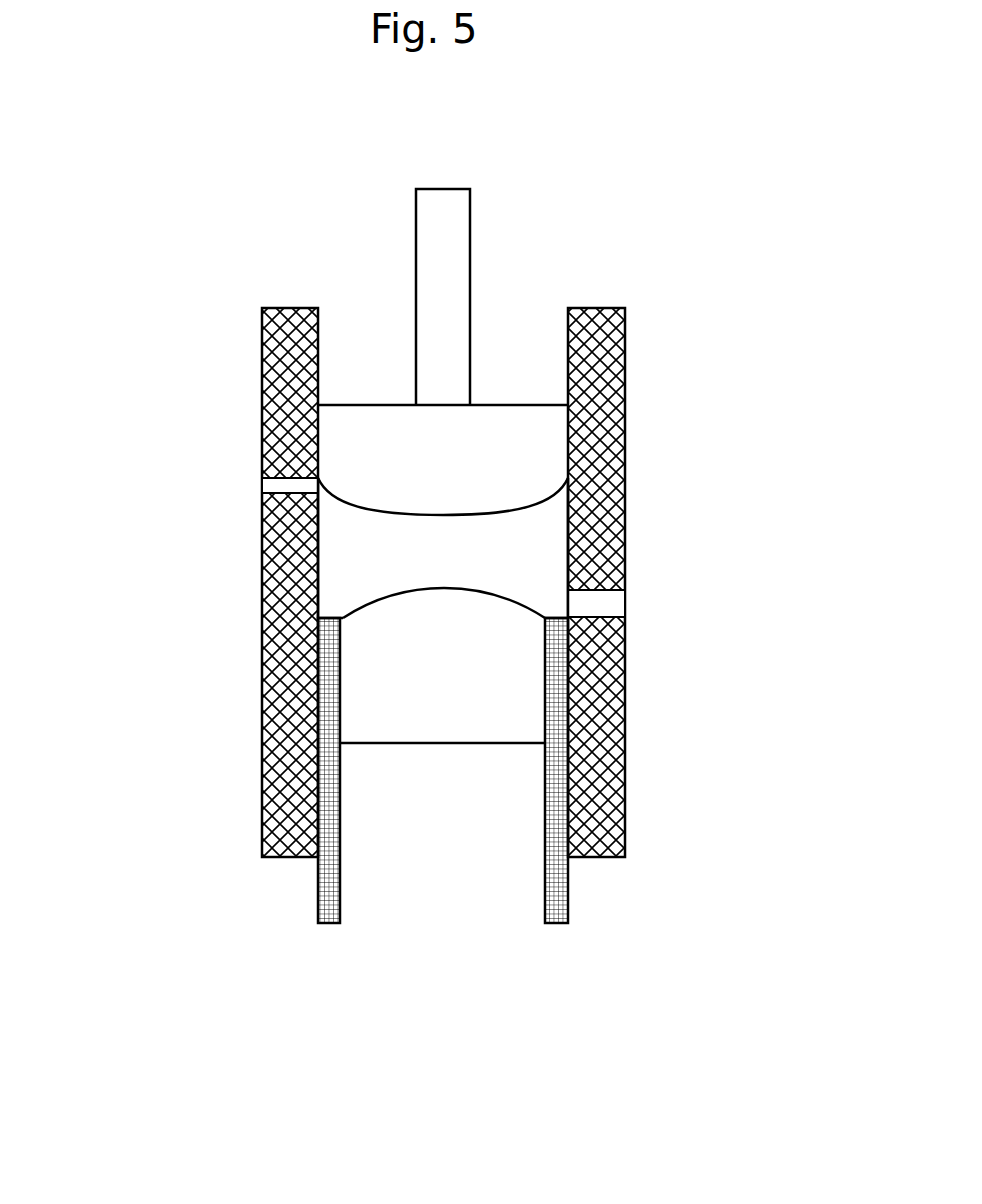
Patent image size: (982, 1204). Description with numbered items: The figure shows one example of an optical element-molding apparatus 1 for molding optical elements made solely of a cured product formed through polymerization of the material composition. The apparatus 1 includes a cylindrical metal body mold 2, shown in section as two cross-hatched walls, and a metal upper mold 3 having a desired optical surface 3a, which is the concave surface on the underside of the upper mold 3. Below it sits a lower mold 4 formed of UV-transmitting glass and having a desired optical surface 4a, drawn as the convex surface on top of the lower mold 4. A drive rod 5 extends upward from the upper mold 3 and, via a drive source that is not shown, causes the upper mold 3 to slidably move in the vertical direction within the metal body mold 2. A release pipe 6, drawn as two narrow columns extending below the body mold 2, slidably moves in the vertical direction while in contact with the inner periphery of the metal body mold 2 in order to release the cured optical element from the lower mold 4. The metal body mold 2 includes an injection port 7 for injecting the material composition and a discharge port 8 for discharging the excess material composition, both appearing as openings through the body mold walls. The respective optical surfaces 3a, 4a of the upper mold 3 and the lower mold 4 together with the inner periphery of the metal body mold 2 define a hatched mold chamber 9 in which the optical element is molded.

The optical element-molding apparatus 1 is at (70, 129).
The cylindrical metal body mold 2 is at (270, 388).
The metal upper mold 3 is at (431, 407).
The optical surface 3a is at (406, 512).
The lower mold 4 is at (393, 680).
The optical surface 4a is at (411, 590).
The drive rod 5 is at (453, 285).
The release pipe 6 is at (337, 910).
The injection port 7 is at (615, 605).
The discharge port 8 is at (272, 486).
The mold chamber 9 is at (527, 547).